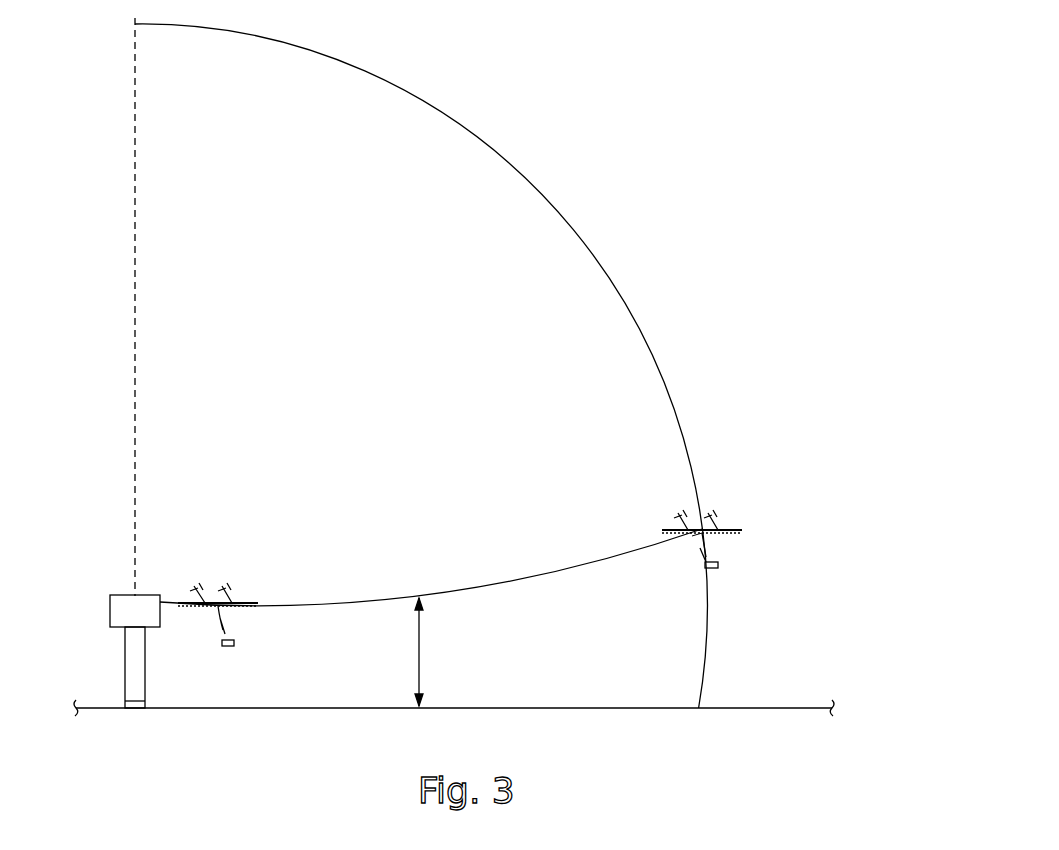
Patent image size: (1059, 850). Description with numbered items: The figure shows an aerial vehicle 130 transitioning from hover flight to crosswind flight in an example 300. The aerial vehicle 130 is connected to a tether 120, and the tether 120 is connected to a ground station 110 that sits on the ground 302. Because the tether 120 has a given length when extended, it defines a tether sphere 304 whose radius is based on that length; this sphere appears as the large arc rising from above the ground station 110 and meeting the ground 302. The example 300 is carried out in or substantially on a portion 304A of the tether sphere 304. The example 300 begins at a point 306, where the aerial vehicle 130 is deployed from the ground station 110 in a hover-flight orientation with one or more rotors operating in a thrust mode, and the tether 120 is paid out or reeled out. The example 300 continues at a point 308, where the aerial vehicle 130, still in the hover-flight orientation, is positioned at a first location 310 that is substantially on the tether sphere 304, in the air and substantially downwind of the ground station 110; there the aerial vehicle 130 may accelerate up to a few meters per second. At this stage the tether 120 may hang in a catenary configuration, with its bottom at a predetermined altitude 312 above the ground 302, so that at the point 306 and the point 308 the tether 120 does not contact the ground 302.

The ground station 110 is at (125, 672).
The tether 120 is at (560, 571).
The aerial vehicle 130 is at (484, 553).
The example 300 is at (670, 127).
The ground 302 is at (750, 706).
The tether sphere 304 is at (670, 385).
The portion of the tether sphere 304A is at (657, 687).
The point 306 is at (237, 556).
The point 308 is at (726, 520).
The first location 310 is at (712, 537).
The predetermined altitude 312 is at (420, 644).